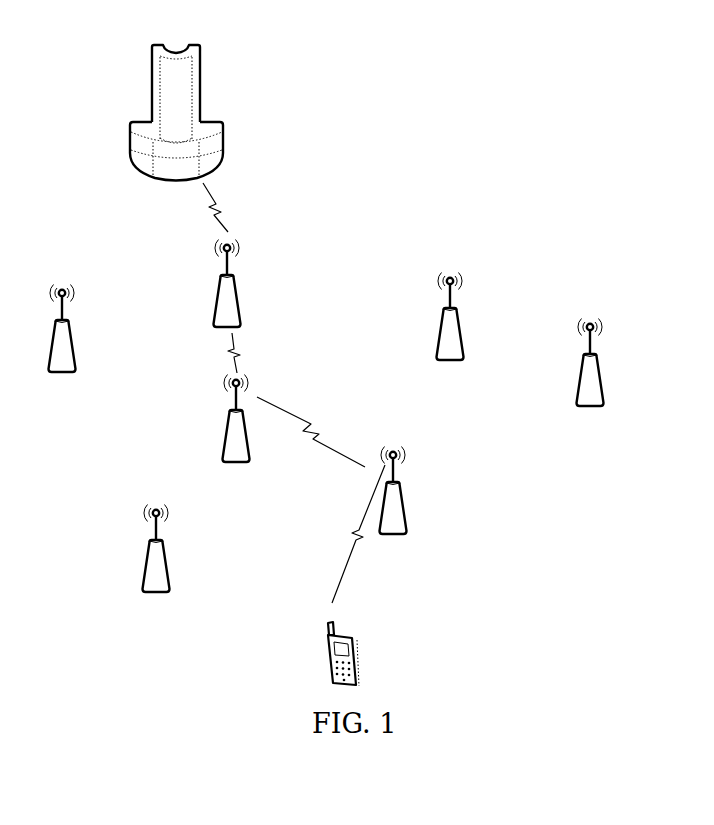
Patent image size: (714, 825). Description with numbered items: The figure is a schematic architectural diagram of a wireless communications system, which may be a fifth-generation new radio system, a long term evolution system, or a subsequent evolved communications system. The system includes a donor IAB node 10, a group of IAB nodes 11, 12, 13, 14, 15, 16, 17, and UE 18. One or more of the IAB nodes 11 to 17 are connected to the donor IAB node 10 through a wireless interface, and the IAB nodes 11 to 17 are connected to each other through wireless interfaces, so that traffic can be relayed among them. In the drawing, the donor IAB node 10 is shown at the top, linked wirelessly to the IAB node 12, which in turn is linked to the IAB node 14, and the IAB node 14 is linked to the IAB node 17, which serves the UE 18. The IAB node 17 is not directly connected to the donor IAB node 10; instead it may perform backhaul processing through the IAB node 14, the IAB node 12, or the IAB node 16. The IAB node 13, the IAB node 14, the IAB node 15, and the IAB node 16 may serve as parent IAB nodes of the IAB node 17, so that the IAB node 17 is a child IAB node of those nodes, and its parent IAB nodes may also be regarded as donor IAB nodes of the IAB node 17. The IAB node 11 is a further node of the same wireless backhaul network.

The donor IAB node 10 is at (192, 111).
The IAB node 11 is at (73, 341).
The IAB node 12 is at (238, 300).
The IAB node 13 is at (462, 330).
The IAB node 14 is at (222, 448).
The IAB node 15 is at (602, 369).
The IAB node 16 is at (168, 569).
The IAB node 17 is at (406, 494).
The UE 18 is at (358, 651).